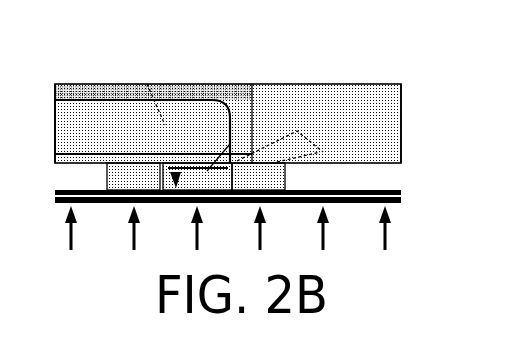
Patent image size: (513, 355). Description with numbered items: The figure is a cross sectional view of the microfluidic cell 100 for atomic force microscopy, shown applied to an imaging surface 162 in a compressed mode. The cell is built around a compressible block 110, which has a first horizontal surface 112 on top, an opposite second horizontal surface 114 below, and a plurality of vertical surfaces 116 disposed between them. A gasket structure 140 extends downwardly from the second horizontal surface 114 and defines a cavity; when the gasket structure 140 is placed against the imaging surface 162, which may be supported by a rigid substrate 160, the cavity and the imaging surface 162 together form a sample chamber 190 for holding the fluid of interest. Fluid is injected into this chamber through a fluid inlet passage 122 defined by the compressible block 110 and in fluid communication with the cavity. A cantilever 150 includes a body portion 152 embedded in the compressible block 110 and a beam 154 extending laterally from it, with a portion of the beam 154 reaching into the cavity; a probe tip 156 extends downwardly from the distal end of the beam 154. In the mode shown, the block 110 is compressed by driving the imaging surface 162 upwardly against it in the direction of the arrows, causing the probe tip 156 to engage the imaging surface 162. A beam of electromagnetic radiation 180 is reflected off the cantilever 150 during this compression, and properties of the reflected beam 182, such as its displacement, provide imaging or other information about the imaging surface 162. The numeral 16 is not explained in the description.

The microfluidic cell 100 is at (354, 81).
The compressible block 110 is at (259, 80).
The first horizontal surface 112 is at (147, 85).
The second horizontal surface 114 is at (335, 163).
The vertical surfaces 116 is at (54, 91).
The fluid inlet passage 122 is at (55, 133).
The gasket structure 140 is at (288, 178).
The cantilever 150 is at (299, 126).
The body portion 152 is at (250, 84).
The beam 154 is at (200, 200).
The probe tip 156 is at (176, 190).
The rigid substrate 160 is at (122, 196).
The imaging surface 162 is at (98, 188).
The beam of electromagnetic radiation 180 is at (147, 84).
The reflected beam 182 is at (201, 42).
The sample chamber 190 is at (207, 196).
The sensor 16 is at (0, 166).